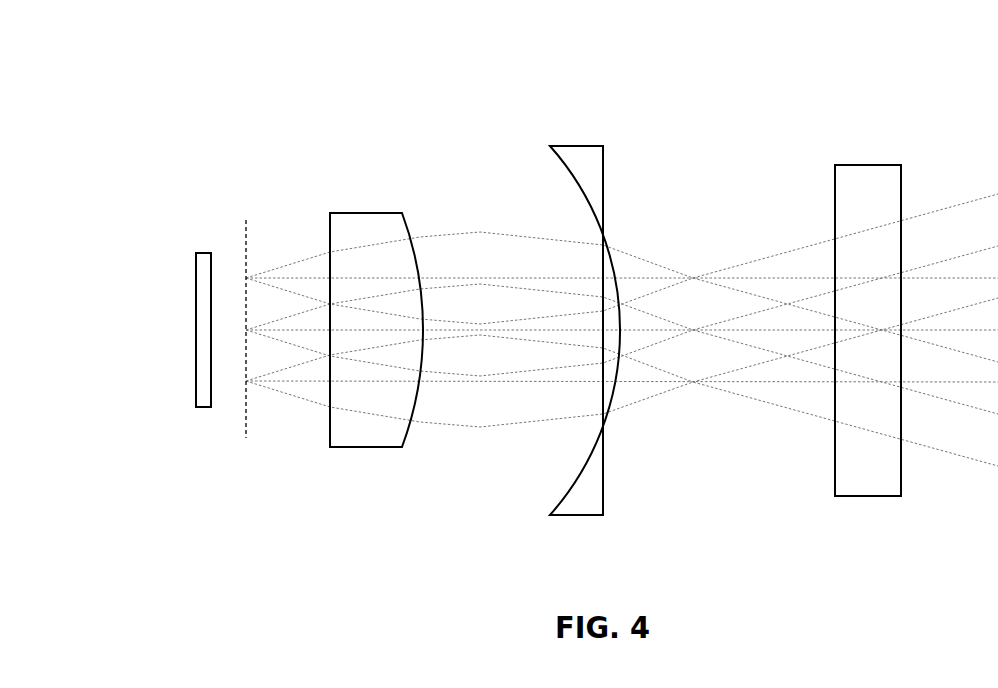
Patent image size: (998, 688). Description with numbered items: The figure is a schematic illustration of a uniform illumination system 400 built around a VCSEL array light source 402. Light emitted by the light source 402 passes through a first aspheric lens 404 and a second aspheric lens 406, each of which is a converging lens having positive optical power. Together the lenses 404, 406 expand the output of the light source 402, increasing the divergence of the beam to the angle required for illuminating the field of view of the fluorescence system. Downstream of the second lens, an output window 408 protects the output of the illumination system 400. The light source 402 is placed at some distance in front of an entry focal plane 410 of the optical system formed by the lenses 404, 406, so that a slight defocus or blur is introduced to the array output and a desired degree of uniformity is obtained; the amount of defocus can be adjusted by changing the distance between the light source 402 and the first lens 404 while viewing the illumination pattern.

The uniform illumination system 400 is at (362, 44).
The VCSEL array light source 402 is at (203, 252).
The first aspheric lens 404 is at (349, 448).
The second aspheric lens 406 is at (578, 146).
The output window 408 is at (860, 497).
The entry focal plane 410 is at (243, 448).